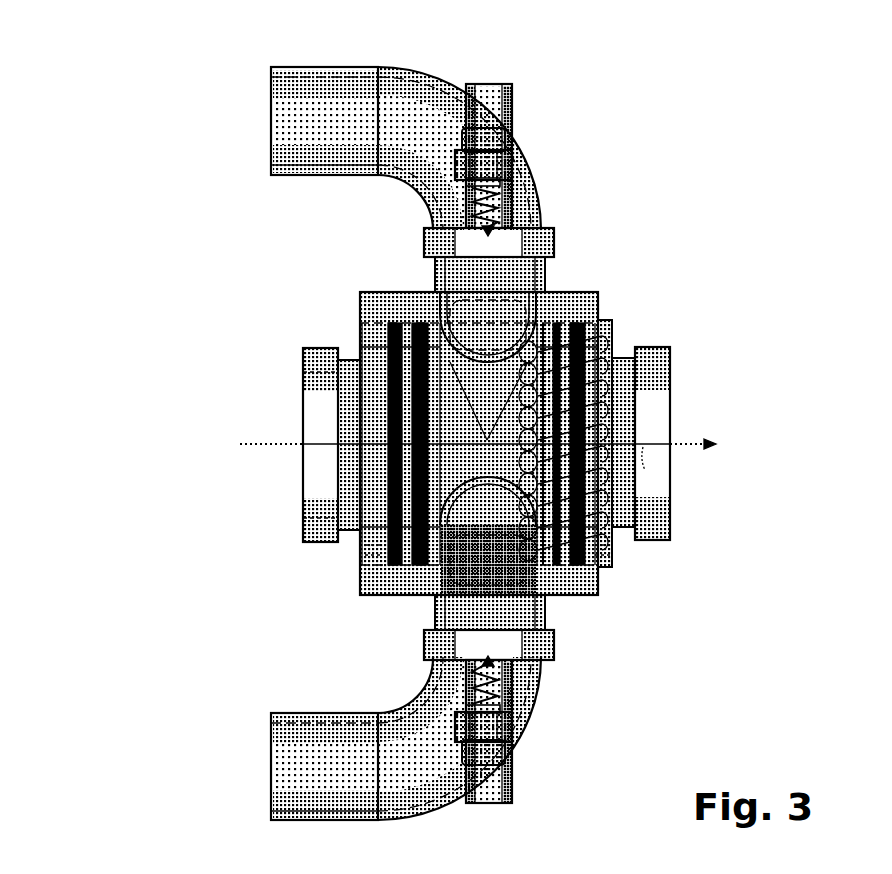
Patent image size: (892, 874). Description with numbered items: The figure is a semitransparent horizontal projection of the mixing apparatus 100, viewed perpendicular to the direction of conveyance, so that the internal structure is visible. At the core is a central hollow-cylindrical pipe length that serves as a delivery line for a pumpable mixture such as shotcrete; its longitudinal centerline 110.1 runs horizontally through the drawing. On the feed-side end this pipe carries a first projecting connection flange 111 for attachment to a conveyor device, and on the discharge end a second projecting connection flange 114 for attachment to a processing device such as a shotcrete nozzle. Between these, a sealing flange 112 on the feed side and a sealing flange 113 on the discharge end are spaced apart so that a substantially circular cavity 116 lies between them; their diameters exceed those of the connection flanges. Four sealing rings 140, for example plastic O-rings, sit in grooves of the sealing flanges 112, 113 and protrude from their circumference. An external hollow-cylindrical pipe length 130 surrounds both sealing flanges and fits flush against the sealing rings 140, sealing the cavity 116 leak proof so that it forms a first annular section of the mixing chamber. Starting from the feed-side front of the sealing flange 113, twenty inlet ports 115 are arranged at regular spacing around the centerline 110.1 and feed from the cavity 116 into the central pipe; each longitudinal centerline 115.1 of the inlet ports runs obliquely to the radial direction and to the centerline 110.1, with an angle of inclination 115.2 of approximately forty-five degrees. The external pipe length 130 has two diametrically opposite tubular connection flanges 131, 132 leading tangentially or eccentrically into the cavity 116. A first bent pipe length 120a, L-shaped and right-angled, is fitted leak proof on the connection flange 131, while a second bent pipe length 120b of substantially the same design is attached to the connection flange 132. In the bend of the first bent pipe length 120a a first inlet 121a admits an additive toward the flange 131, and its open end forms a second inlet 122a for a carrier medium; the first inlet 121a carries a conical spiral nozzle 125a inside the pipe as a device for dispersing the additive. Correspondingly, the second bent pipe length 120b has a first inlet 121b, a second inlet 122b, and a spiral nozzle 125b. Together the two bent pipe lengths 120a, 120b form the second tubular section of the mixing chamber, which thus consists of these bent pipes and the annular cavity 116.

The mixing apparatus 100 is at (158, 642).
The longitudinal centerline 110.1 is at (712, 444).
The first projecting connection flange 111 is at (318, 400).
The sealing flange 112 is at (353, 335).
The sealing flange 113 is at (614, 328).
The second projecting connection flange 114 is at (660, 368).
The inlet ports 115 is at (570, 393).
The longitudinal centerline of the inlet ports 115.1 is at (468, 377).
The angle of inclination 115.2 is at (645, 452).
The cavity 116 is at (470, 456).
The first bent pipe length 120a is at (575, 684).
The second bent pipe length 120b is at (565, 135).
The first inlet 121a is at (512, 790).
The first inlet 121b is at (520, 98).
The second inlet 122a is at (280, 782).
The second inlet 122b is at (275, 95).
The spiral nozzle 125a is at (505, 700).
The spiral nozzle 125b is at (540, 207).
The external hollow-cylindrical pipe length 130 is at (386, 290).
The connection flange 131 is at (522, 612).
The connection flange 132 is at (545, 272).
The sealing rings 140 is at (358, 556).